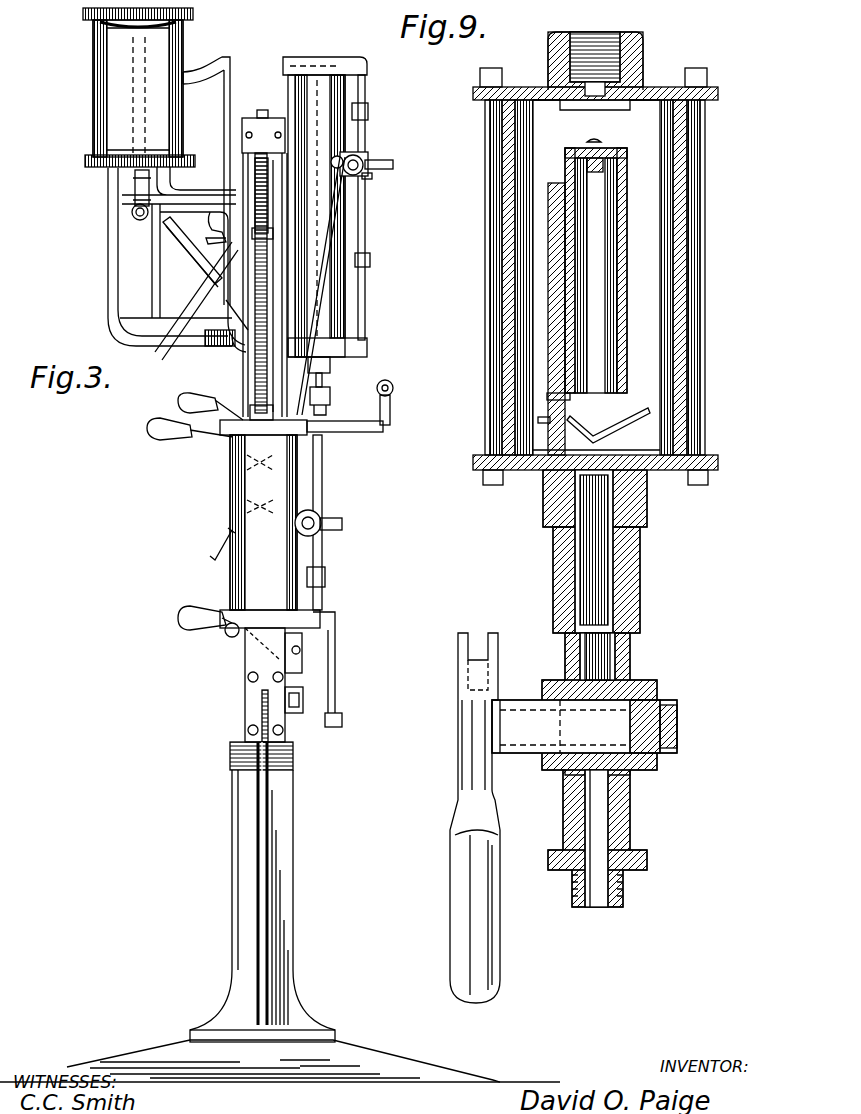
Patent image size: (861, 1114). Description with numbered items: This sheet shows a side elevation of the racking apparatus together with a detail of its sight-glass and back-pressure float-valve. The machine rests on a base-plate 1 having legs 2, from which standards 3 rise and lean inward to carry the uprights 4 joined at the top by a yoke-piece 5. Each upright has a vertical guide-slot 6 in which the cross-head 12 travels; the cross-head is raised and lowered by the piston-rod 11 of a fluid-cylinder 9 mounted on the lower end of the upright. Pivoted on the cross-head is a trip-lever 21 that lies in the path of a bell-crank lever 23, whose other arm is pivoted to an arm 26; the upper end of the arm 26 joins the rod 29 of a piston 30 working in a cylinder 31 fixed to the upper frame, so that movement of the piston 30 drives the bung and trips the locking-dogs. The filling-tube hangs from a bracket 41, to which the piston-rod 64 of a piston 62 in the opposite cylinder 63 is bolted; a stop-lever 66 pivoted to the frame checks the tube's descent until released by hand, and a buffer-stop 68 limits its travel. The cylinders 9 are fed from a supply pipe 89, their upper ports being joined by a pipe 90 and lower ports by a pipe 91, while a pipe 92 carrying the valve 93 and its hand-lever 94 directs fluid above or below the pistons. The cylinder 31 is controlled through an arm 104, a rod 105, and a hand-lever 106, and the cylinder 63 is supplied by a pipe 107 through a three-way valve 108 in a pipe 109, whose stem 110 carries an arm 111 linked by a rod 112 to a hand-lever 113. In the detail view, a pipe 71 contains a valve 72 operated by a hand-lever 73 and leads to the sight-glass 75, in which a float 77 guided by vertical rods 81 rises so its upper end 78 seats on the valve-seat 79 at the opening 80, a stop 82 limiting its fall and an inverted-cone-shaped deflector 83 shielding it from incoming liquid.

In FIG. 3, the base-plate 1 is at (232, 1082).
In FIG. 3, the extensions or legs 2 is at (150, 1050).
In FIG. 3, the standards 3 is at (232, 876).
In FIG. 3, the uprights 4 is at (250, 660).
In FIG. 3, the yoke-piece 5 is at (259, 118).
In FIG. 3, the vertical guide-slot 6 is at (267, 278).
In FIG. 3, the fluid-cylinder 9 is at (290, 548).
In FIG. 3, the piston-rod 11 is at (275, 313).
In FIG. 3, the cross-head 12 is at (273, 233).
In FIG. 3, the trip-lever 21 is at (214, 234).
In FIG. 3, the bell-crank lever 23 is at (192, 259).
In FIG. 3, the arm 26 is at (167, 347).
In FIG. 3, the rod 29 is at (137, 203).
In FIG. 3, the piston 30 is at (110, 34).
In FIG. 3, the cylinder 31 is at (97, 118).
In FIG. 3, the bracket 41 is at (331, 395).
In FIG. 3, the fluid-actuated piston 62 is at (336, 58).
In FIG. 3, the cylinder 63 is at (333, 233).
In FIG. 3, the piston-rod 64 is at (331, 363).
In FIG. 3, the stop-lever 66 is at (226, 541).
In FIG. 3, the buffer-stop 68 is at (305, 697).
In FIG. 9, the pipe 71 is at (630, 805).
In FIG. 9, the valve 72 is at (550, 715).
In FIG. 9, the hand-lever 73 is at (502, 907).
In FIG. 9, the sight-glass 75 is at (690, 300).
In FIG. 9, the float 77 is at (620, 253).
In FIG. 9, the upper end of float 78 is at (603, 152).
In FIG. 9, the valve-seat 79 is at (575, 108).
In FIG. 9, the opening 80 is at (640, 58).
In FIG. 9, the vertical rods 81 is at (549, 298).
In FIG. 9, the stop 82 is at (570, 398).
In FIG. 9, the inverted-cone-shaped deflector 83 is at (630, 433).
In FIG. 3, the pipe 89 is at (342, 524).
In FIG. 3, the pipe 90 is at (395, 410).
In FIG. 3, the pipe 91 is at (340, 655).
In FIG. 3, the pipe 92 is at (325, 573).
In FIG. 3, the valve 93 is at (318, 512).
In FIG. 3, the hand-lever 94 is at (196, 624).
In FIG. 3, the arm 104 is at (206, 77).
In FIG. 3, the rod 105 is at (224, 134).
In FIG. 3, the hand-lever 106 is at (223, 413).
In FIG. 3, the pipe 107 is at (393, 163).
In FIG. 3, the three-way valve 108 is at (363, 155).
In FIG. 3, the pipe 109 is at (371, 250).
In FIG. 3, the stem 110 is at (372, 177).
In FIG. 3, the arm 111 is at (343, 157).
In FIG. 3, the rod 112 is at (322, 277).
In FIG. 3, the hand-lever 113 is at (203, 440).